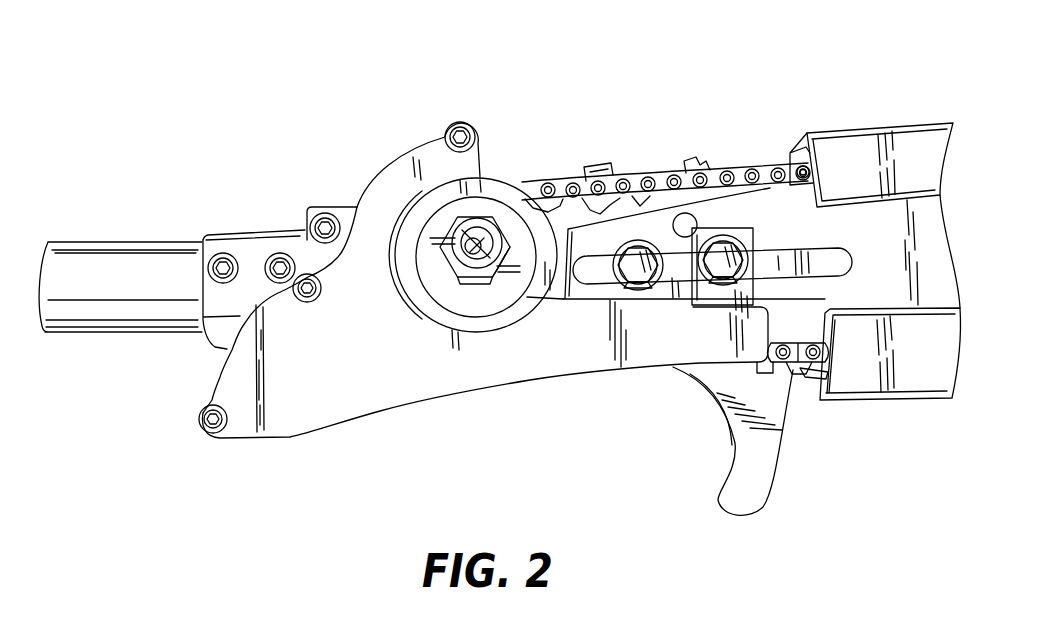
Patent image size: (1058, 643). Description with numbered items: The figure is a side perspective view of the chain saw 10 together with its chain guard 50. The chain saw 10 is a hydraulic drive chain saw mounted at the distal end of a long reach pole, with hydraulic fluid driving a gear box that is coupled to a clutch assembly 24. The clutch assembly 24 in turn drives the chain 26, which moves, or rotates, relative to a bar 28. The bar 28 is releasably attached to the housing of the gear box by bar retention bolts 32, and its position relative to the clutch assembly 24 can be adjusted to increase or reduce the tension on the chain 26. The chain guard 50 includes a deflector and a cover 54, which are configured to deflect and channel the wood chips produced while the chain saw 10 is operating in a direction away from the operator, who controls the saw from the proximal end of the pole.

The chain saw 10 is at (266, 99).
The clutch assembly 24 is at (497, 166).
The chain 26 is at (687, 157).
The bar 28 is at (793, 201).
The bar retention bolts 32 is at (712, 290).
The chain guard 50 is at (440, 411).
The cover 54 is at (322, 393).